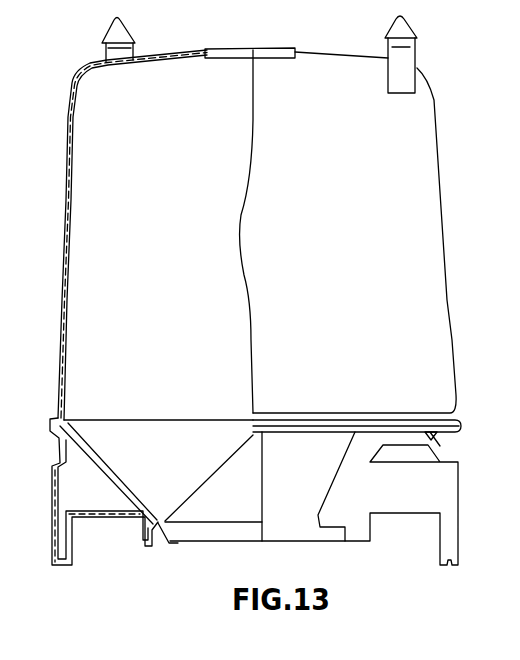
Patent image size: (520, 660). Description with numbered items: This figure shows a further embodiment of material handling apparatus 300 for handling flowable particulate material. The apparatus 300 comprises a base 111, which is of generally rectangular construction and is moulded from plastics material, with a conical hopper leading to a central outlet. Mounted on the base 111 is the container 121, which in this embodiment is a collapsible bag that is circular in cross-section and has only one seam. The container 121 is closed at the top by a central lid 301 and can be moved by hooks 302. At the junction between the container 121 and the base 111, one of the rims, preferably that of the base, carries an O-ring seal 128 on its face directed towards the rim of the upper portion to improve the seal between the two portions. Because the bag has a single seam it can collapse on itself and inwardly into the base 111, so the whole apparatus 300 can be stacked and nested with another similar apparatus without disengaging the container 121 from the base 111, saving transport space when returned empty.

The material handling apparatus 300 is at (518, 176).
The central lid 301 is at (270, 53).
The hooks 302 is at (413, 60).
The container 121 is at (348, 282).
The O-ring seal 128 is at (458, 428).
The base 111 is at (462, 491).